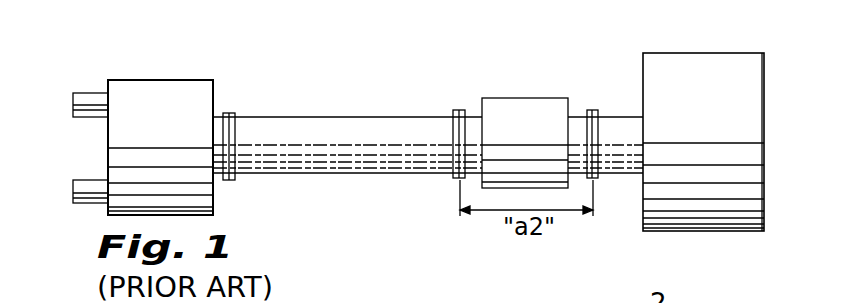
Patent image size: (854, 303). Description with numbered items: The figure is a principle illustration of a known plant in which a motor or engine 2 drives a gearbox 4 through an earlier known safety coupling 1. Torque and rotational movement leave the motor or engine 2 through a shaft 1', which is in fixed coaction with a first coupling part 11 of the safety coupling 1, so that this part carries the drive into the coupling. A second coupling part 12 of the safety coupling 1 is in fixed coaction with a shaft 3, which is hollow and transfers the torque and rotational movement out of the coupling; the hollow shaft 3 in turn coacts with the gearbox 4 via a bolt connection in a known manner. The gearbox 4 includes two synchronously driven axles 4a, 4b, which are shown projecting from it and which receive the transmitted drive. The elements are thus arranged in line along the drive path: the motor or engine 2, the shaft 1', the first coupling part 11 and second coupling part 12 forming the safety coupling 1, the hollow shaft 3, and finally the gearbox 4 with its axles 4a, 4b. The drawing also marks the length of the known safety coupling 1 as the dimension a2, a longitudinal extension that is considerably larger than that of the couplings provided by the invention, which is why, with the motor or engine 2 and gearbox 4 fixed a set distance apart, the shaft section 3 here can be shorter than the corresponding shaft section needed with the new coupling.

The safety coupling 1 is at (525, 113).
The shaft 1' is at (606, 193).
The motor or engine 2 is at (673, 68).
The shaft 3 is at (345, 117).
The gearbox 4 is at (185, 89).
The synchronously driven axle 4a is at (89, 100).
The synchronously driven axle 4b is at (88, 185).
The first coupling part 11 is at (556, 97).
The second coupling part 12 is at (490, 97).